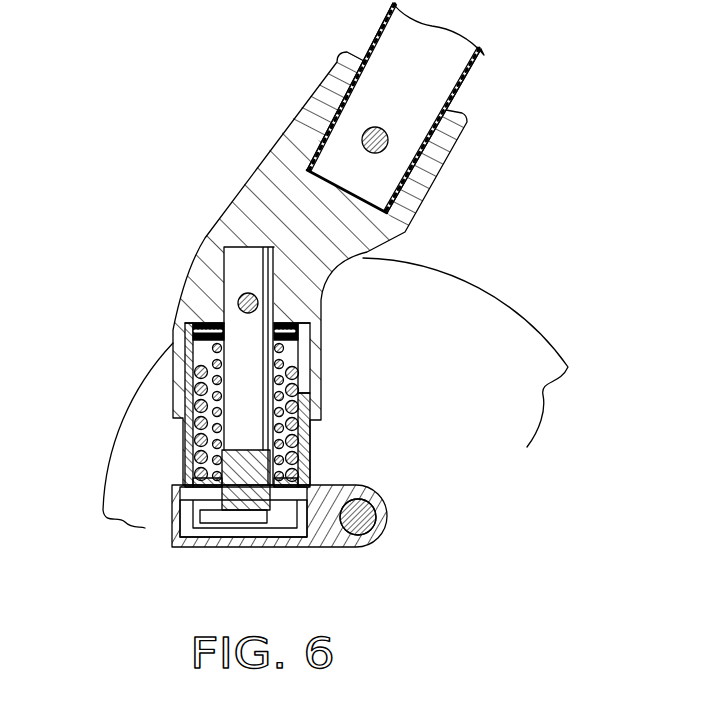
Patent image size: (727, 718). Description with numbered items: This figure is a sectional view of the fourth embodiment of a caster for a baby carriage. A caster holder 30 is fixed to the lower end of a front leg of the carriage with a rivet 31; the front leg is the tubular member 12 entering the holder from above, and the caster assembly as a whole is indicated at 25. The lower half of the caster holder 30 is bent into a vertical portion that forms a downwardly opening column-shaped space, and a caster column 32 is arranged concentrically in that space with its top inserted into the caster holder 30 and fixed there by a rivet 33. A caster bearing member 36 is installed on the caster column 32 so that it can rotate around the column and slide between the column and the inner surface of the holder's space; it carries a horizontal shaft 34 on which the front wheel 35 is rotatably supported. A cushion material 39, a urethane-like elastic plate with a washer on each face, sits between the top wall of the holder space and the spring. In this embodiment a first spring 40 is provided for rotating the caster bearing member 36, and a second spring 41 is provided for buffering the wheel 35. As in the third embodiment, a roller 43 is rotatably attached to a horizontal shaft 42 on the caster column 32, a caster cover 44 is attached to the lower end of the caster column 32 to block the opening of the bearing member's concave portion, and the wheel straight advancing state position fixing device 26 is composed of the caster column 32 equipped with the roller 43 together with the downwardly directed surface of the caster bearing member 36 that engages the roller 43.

The tube 12 is at (432, 108).
The connector assembly 25 is at (277, 268).
The wheel straight advancing state position fixing device 26 is at (209, 430).
The caster holder 30 is at (253, 187).
The rivet 31 is at (388, 148).
The caster column 32 is at (182, 350).
The rivet 33 is at (238, 301).
The horizontal shaft 34 is at (388, 483).
The front wheel 35 is at (520, 317).
The caster bearing member 36 is at (311, 526).
The cushion material 39 is at (175, 330).
The first spring 40 is at (290, 358).
The second spring 41 is at (195, 373).
The horizontal shaft 42 is at (235, 548).
The roller 43 is at (203, 548).
The caster cover 44 is at (288, 548).